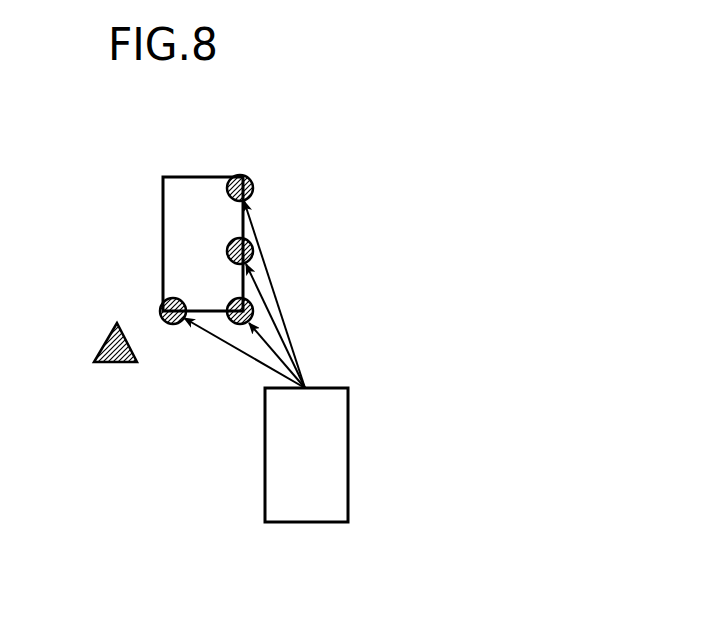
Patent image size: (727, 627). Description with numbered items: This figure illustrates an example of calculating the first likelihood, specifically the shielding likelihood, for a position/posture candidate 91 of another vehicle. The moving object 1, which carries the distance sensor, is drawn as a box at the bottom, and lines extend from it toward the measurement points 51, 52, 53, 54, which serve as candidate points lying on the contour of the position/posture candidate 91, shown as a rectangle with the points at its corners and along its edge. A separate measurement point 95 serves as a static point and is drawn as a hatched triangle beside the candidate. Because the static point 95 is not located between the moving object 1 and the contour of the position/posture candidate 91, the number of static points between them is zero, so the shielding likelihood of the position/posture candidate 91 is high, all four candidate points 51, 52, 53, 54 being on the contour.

The moving object 1 is at (305, 524).
The position/posture candidate 91 is at (164, 176).
The measurement point 51 is at (160, 311).
The measurement point 52 is at (233, 300).
The measurement point 53 is at (227, 251).
The measurement point 54 is at (227, 189).
The measurement point (static point) 95 is at (116, 365).